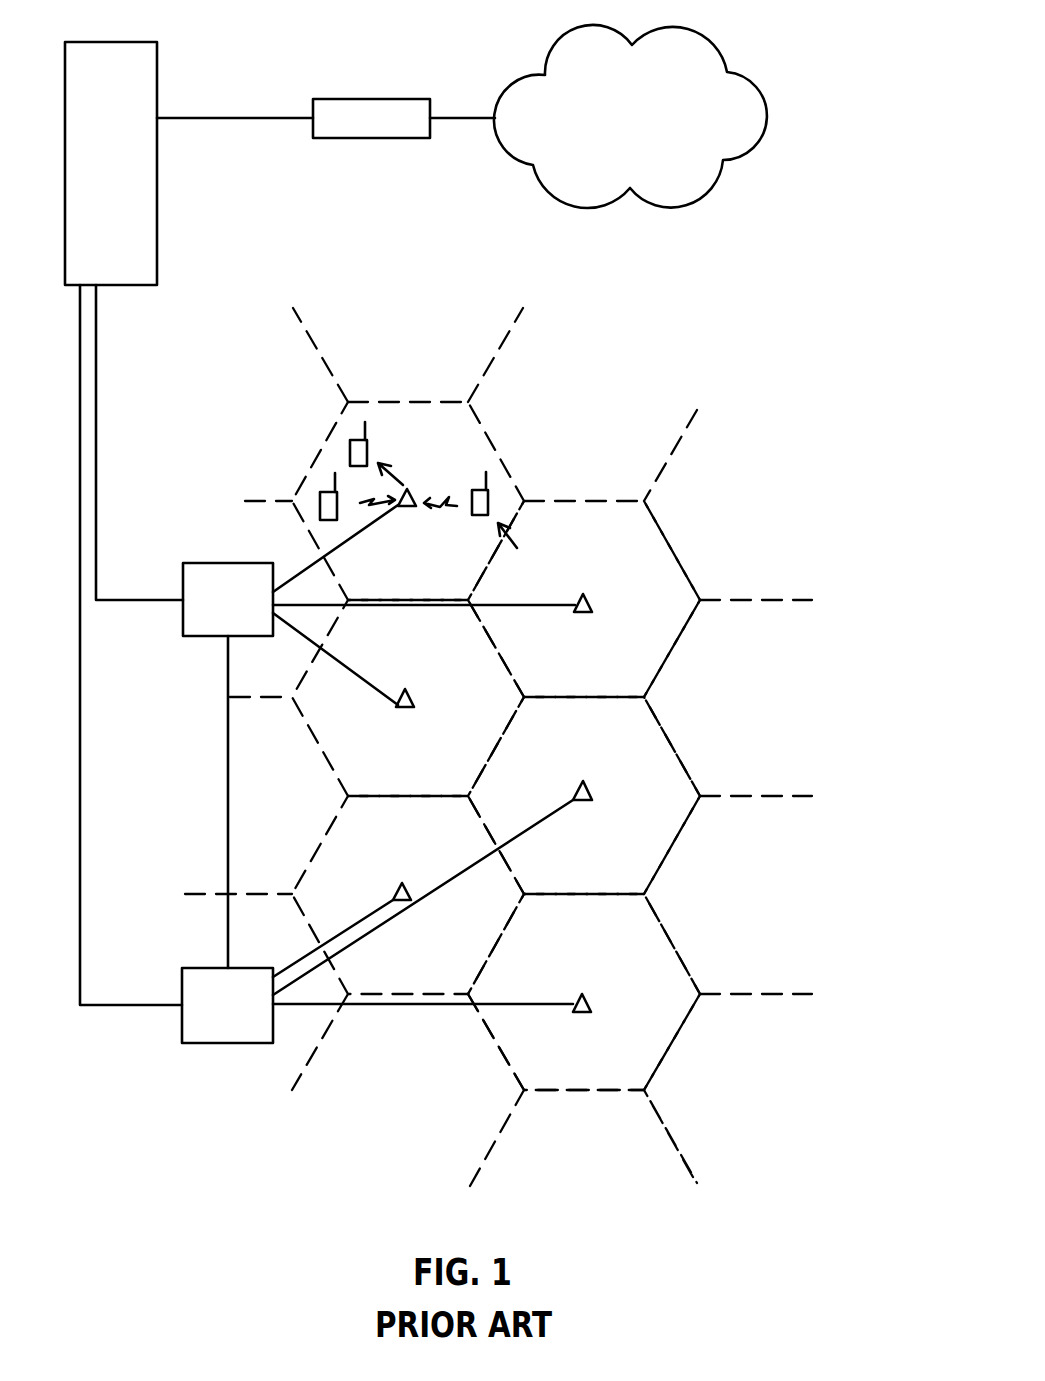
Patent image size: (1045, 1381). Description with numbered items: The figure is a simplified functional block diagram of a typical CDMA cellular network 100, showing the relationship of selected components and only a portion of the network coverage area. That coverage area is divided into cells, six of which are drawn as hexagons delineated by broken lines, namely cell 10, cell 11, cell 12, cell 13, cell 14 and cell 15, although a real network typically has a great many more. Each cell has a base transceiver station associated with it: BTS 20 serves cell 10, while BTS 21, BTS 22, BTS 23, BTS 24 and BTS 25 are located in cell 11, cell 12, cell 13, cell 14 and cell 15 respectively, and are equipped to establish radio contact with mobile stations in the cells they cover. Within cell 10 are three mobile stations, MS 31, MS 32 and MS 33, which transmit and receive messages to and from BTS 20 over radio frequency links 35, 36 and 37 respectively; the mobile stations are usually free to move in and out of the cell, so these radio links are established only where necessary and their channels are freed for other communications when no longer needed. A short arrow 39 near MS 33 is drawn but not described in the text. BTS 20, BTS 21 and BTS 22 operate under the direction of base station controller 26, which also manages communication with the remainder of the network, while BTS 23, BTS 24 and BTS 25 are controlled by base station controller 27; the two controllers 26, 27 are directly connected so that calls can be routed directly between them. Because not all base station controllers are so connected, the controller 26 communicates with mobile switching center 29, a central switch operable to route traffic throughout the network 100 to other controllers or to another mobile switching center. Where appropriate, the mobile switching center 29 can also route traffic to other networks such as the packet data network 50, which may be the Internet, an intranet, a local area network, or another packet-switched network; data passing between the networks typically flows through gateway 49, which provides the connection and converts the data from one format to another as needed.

The cell 10 is at (401, 410).
The cell 11 is at (328, 734).
The cell 12 is at (663, 570).
The cell 13 is at (328, 852).
The cell 14 is at (660, 768).
The cell 15 is at (661, 960).
The base transceiver station 20 is at (411, 490).
The base transceiver station 21 is at (404, 710).
The base transceiver station 22 is at (582, 613).
The base transceiver station 23 is at (397, 893).
The base transceiver station 24 is at (586, 798).
The base transceiver station 25 is at (587, 1010).
The base station controller 26 is at (220, 563).
The base station controller 27 is at (218, 1043).
The mobile switching center 29 is at (115, 42).
The mobile station 31 is at (321, 519).
The mobile station 32 is at (352, 440).
The mobile station 33 is at (488, 497).
The radio frequency link 35 is at (360, 503).
The radio frequency link 36 is at (383, 466).
The radio frequency link 37 is at (447, 512).
The communication link 39 is at (520, 544).
The gateway 49 is at (390, 99).
The packet data network 50 is at (697, 32).
The cellular network 100 is at (245, 1196).